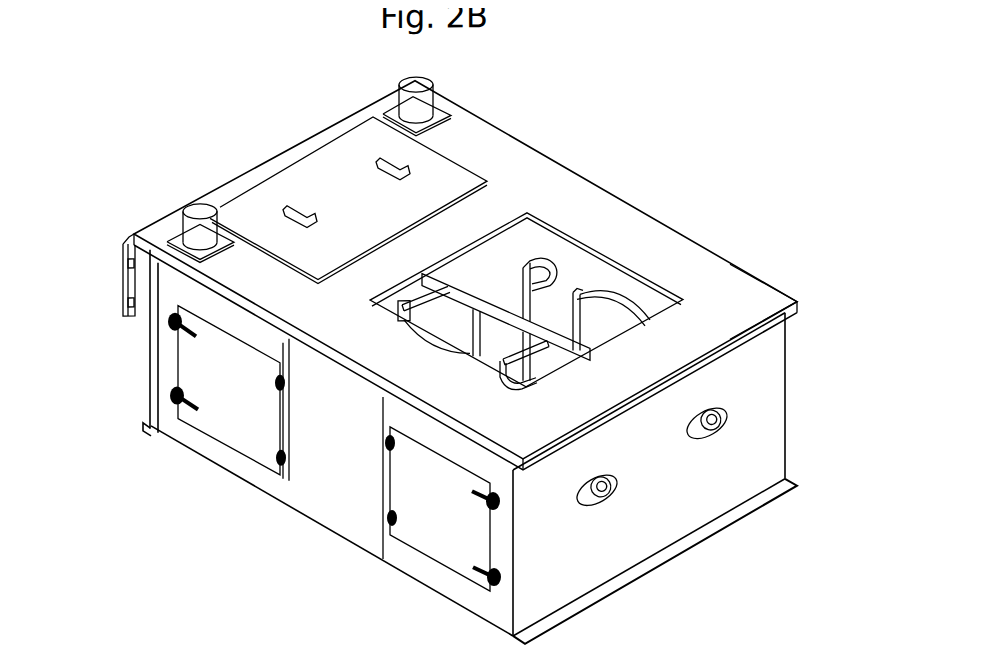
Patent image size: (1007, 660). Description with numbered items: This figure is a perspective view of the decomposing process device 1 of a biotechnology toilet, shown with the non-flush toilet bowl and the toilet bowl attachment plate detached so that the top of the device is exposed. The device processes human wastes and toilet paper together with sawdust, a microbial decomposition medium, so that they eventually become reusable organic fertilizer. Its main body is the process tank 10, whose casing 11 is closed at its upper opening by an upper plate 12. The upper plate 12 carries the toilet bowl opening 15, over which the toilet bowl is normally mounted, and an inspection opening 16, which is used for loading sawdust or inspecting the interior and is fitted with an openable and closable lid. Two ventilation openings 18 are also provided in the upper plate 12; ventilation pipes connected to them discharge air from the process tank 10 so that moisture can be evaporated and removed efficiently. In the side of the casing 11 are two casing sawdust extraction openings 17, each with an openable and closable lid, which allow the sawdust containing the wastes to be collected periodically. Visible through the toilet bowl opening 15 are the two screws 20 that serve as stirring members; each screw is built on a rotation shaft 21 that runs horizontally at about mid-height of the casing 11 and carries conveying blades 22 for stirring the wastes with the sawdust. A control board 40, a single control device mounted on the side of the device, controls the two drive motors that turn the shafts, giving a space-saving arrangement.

The decomposing process device 1 is at (677, 248).
The process tank 10 is at (722, 275).
The casing 11 is at (745, 390).
The upper plate 12 is at (757, 293).
The toilet bowl opening 15 is at (665, 262).
The inspection opening 16 is at (317, 180).
The casing sawdust extraction opening 17 is at (233, 431).
The ventilation opening 18 is at (415, 86).
The screw 20 is at (463, 290).
The rotation shaft 21 is at (488, 300).
The conveying blade 22 is at (587, 270).
The control board 40 is at (137, 314).